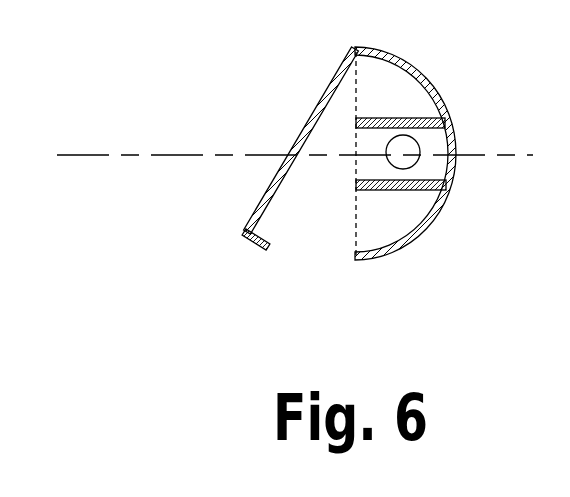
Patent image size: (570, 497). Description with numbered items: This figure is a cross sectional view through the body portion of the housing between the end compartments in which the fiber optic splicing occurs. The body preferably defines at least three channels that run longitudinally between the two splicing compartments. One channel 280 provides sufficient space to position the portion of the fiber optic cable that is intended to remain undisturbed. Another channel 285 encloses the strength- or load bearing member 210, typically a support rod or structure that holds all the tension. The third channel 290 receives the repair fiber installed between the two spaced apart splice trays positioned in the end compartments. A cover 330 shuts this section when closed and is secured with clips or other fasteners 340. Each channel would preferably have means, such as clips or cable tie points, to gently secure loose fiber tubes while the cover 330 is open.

The strength- or load bearing member 210 is at (421, 163).
The channel 280 is at (382, 238).
The channel 285 is at (442, 130).
The channel 290 is at (366, 86).
The cover 330 is at (299, 136).
The fasteners 340 is at (258, 250).